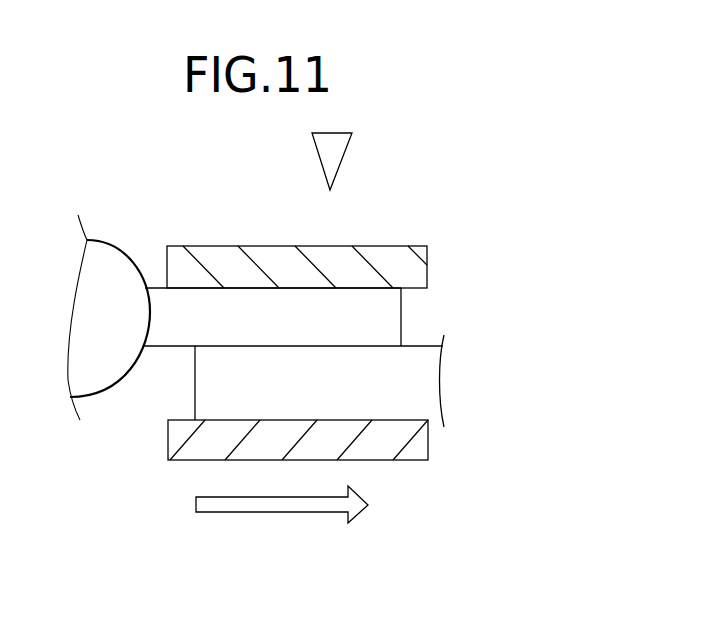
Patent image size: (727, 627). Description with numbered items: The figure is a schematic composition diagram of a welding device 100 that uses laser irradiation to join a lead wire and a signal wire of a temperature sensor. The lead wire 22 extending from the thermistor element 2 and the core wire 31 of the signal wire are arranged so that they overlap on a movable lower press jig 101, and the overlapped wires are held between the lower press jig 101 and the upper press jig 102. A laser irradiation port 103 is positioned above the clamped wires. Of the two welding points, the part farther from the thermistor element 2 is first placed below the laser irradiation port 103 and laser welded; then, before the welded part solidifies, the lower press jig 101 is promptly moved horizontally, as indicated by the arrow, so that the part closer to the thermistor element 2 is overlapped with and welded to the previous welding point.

The thermistor element 2 is at (127, 243).
The lead wire 22 is at (372, 312).
The core wire 31 is at (425, 388).
The welding device 100 is at (348, 342).
The lower press jig 101 is at (380, 440).
The upper press jig 102 is at (358, 246).
The laser irradiation port 103 is at (338, 143).